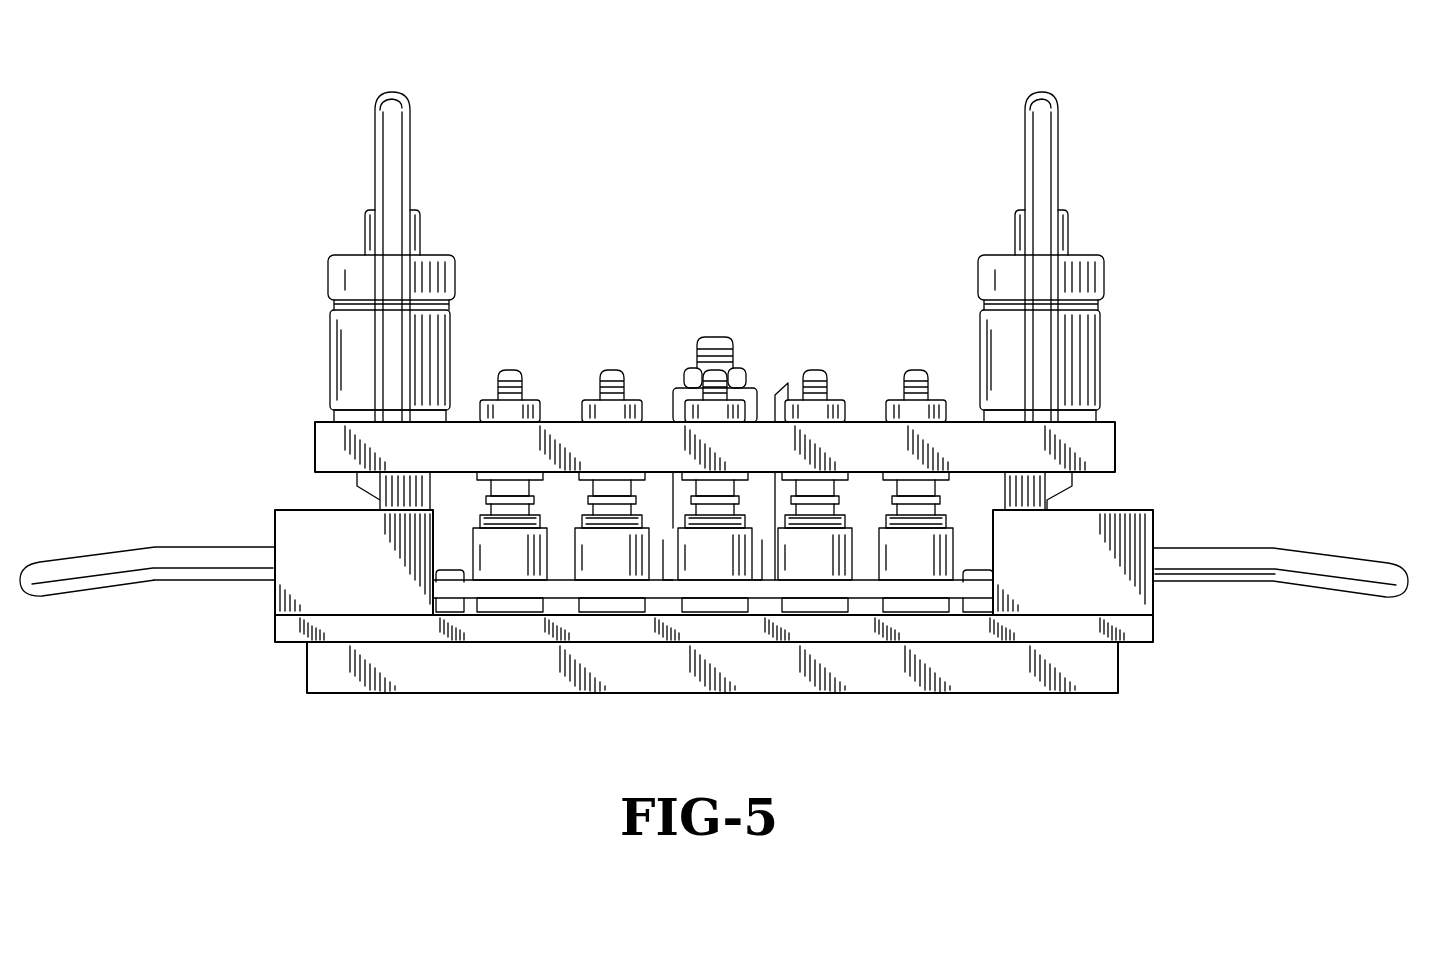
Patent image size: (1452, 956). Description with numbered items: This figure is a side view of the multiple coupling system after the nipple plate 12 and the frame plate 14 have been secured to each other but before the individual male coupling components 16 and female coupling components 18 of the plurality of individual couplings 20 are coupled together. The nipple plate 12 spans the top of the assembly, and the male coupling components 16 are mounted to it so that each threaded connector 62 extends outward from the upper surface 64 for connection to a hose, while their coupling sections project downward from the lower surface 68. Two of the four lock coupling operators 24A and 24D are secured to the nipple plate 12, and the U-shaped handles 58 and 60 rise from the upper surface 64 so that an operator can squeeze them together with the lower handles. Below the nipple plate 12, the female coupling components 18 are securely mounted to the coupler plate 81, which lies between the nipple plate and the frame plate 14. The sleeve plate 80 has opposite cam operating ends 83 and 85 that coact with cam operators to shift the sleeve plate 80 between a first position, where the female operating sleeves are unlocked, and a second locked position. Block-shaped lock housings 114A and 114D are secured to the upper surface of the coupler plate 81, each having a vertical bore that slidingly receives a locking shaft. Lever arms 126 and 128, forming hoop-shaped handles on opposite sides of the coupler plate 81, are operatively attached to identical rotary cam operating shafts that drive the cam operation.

The nipple plate 12 is at (345, 445).
The frame plate 14 is at (1100, 678).
The male coupling component 16 is at (833, 400).
The female coupling component 18 is at (708, 558).
The individual couplings 20 is at (745, 508).
The lock coupling operator 24A is at (1088, 355).
The lock coupling operator 24D is at (353, 350).
The U-shaped handle 58 is at (1048, 98).
The U-shaped handle 60 is at (393, 100).
The threaded connector 62 is at (620, 372).
The upper surface 64 is at (963, 422).
The lower surface 68 is at (1107, 477).
The sleeve plate 80 is at (525, 590).
The coupler plate 81 is at (1140, 628).
The cam operating end 83 is at (445, 602).
The cam operating end 85 is at (975, 602).
The lock housing 114A is at (1070, 570).
The lock housing 114D is at (358, 570).
The lever arm 126 is at (1392, 573).
The lever arm 128 is at (57, 575).